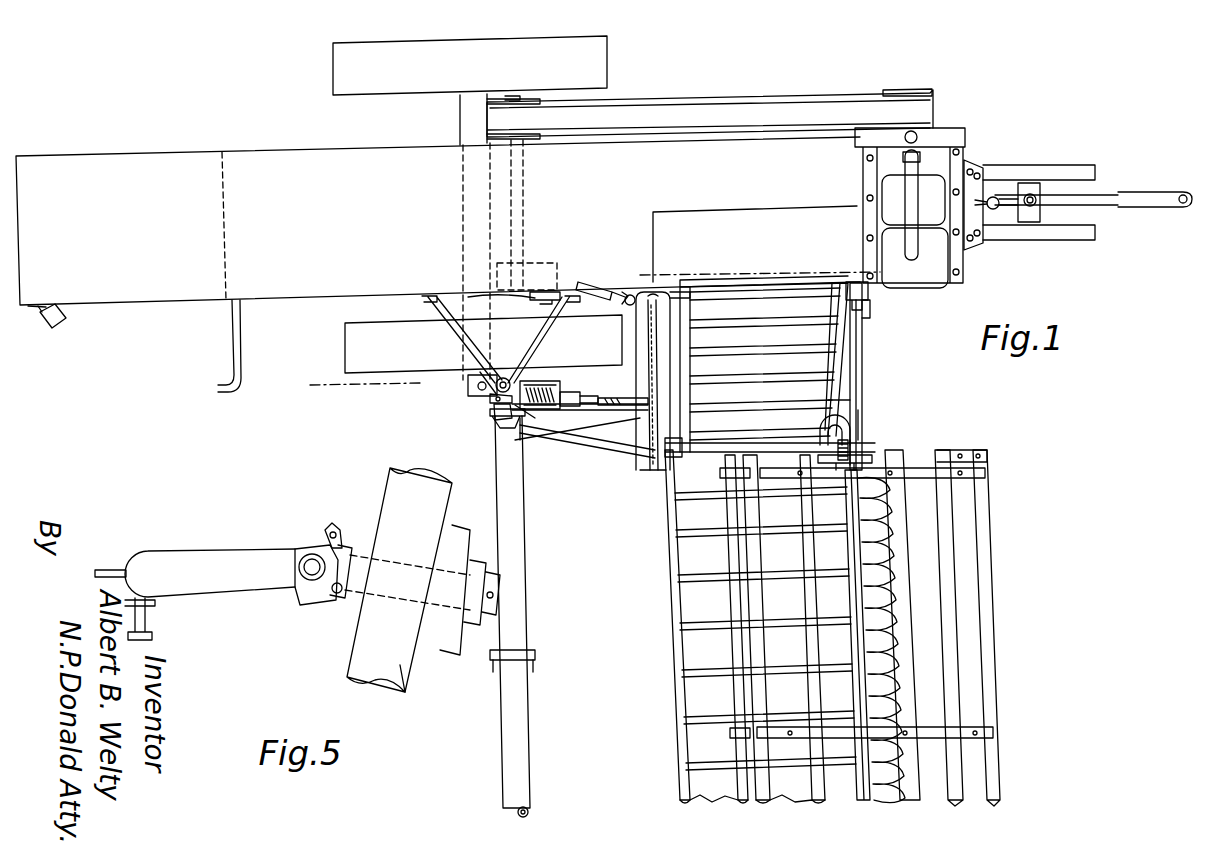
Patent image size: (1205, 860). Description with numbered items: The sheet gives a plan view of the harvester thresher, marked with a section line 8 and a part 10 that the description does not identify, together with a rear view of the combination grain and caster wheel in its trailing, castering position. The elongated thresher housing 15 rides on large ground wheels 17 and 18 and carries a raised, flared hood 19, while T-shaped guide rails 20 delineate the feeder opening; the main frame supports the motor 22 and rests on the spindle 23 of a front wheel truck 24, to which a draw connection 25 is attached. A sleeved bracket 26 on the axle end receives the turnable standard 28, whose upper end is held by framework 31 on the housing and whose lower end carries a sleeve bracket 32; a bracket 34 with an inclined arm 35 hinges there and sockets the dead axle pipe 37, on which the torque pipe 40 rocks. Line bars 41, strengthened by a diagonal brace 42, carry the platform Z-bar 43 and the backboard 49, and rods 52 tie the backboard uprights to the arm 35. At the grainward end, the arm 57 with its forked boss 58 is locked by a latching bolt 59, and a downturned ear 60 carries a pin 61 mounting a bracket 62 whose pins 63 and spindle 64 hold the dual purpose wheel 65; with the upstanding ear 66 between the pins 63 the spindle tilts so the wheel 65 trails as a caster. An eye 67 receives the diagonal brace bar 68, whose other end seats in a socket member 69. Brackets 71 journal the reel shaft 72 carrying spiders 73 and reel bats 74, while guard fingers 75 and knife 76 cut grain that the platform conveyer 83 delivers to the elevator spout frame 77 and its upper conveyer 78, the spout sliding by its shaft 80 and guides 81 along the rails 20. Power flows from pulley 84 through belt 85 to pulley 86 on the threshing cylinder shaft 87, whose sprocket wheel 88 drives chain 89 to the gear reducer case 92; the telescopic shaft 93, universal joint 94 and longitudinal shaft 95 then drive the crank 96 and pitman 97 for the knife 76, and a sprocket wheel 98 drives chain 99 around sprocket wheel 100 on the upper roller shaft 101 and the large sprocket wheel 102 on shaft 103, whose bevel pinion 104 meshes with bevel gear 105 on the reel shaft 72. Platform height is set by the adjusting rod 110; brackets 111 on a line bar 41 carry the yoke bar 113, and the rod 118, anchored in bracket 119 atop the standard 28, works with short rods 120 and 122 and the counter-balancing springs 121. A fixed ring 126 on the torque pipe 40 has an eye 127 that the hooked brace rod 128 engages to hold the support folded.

In FIG. 1, the section line 8 is at (856, 273).
In FIG. 1, the post 10 is at (460, 115).
In FIG. 1, the thresher housing 15 is at (334, 150).
In FIG. 1, the ground wheel 17 is at (608, 68).
In FIG. 1, the ground wheel 18 is at (382, 372).
In FIG. 1, the hood 19 is at (790, 214).
In FIG. 1, the guide rails 20 is at (870, 290).
In FIG. 1, the motor 22 is at (960, 264).
In FIG. 1, the spindle 23 is at (1030, 185).
In FIG. 1, the front wheel truck 24 is at (1085, 165).
In FIG. 1, the draw connection 25 is at (1150, 197).
In FIG. 1, the sleeved bracket 26 is at (468, 390).
In FIG. 1, the standard 28 is at (505, 378).
In FIG. 1, the framework 31 is at (435, 300).
In FIG. 1, the sleeve bracket 32 is at (484, 375).
In FIG. 1, the bracket 34 is at (490, 400).
In FIG. 1, the arm 35 is at (494, 418).
In FIG. 1, the axle pipe 37 is at (517, 808).
In FIG. 1, the torque pipe 40 is at (522, 470).
In FIG. 1, the line bars 41 is at (562, 438).
In FIG. 1, the diagonal brace 42 is at (524, 445).
In FIG. 1, the platform Z-bar 43 is at (850, 645).
In FIG. 1, the backboard 49 is at (668, 526).
In FIG. 1, the rods 52 is at (606, 452).
In FIG. 5, the arm 57 is at (205, 555).
In FIG. 5, the forked boss 58 is at (312, 604).
In FIG. 5, the latching bolt 59 is at (148, 620).
In FIG. 5, the downturned ear 60 is at (350, 592).
In FIG. 5, the pin 61 is at (345, 598).
In FIG. 5, the bracket 62 is at (395, 520).
In FIG. 5, the pins 63 is at (335, 522).
In FIG. 5, the spindle 64 is at (468, 622).
In FIG. 5, the dual purpose wheel 65 is at (402, 670).
In FIG. 5, the upstanding ear 66 is at (315, 555).
In FIG. 5, the eye 67 is at (115, 568).
In FIG. 1, the diagonal brace bar 68 is at (68, 322).
In FIG. 1, the socket member 69 is at (46, 318).
In FIG. 1, the brackets 71 is at (850, 432).
In FIG. 1, the reel shaft 72 is at (866, 684).
In FIG. 1, the spiders 73 is at (927, 470).
In FIG. 1, the reel bats 74 is at (955, 545).
In FIG. 1, the guard fingers 75 is at (880, 560).
In FIG. 1, the knife 76 is at (870, 606).
In FIG. 1, the elevator spout frame 77 is at (862, 420).
In FIG. 1, the upper conveyer 78 is at (835, 350).
In FIG. 1, the shaft 80 is at (865, 302).
In FIG. 1, the guides 81 is at (850, 286).
In FIG. 1, the platform conveyer 83 is at (683, 577).
In FIG. 1, the pulley 84 is at (925, 90).
In FIG. 1, the belt 85 is at (757, 100).
In FIG. 1, the second pulley 86 is at (538, 99).
In FIG. 1, the threshing cylinder shaft 87 is at (513, 96).
In FIG. 1, the sprocket wheel 88 is at (568, 297).
In FIG. 1, the chain 89 is at (470, 296).
In FIG. 1, the gear reducer case 92 is at (545, 265).
In FIG. 1, the telescopic shaft 93 is at (626, 305).
In FIG. 1, the universal joint 94 is at (618, 290).
In FIG. 1, the longitudinal shaft 95 is at (638, 318).
In FIG. 1, the crank 96 is at (868, 316).
In FIG. 1, the pitman 97 is at (848, 400).
In FIG. 1, the sprocket wheel 98 is at (645, 293).
In FIG. 1, the endless sprocket chain 99 is at (688, 338).
In FIG. 1, the sprocket wheel 100 is at (660, 290).
In FIG. 1, the upper roller shaft 101 is at (682, 292).
In FIG. 1, the sprocket wheel 102 is at (650, 468).
In FIG. 1, the longitudinal shaft 103 is at (710, 452).
In FIG. 1, the bevel pinion 104 is at (850, 445).
In FIG. 1, the bevel gear 105 is at (874, 458).
In FIG. 1, the vertical adjusting rod 110 is at (612, 398).
In FIG. 1, the brackets 111 is at (585, 396).
In FIG. 1, the yoke bar 113 is at (590, 411).
In FIG. 1, the rod 118 is at (495, 428).
In FIG. 1, the bracket 119 is at (494, 400).
In FIG. 1, the short rod 120 is at (569, 392).
In FIG. 1, the counter-balancing springs 121 is at (545, 381).
In FIG. 1, the short rod 122 is at (525, 412).
In FIG. 1, the fixed ring 126 is at (528, 648).
In FIG. 1, the eye 127 is at (537, 655).
In FIG. 1, the hooked brace rod 128 is at (240, 345).